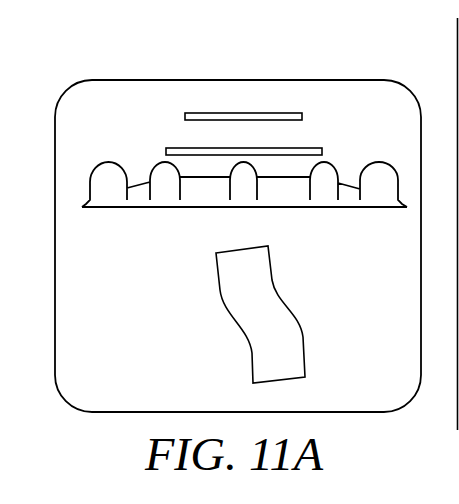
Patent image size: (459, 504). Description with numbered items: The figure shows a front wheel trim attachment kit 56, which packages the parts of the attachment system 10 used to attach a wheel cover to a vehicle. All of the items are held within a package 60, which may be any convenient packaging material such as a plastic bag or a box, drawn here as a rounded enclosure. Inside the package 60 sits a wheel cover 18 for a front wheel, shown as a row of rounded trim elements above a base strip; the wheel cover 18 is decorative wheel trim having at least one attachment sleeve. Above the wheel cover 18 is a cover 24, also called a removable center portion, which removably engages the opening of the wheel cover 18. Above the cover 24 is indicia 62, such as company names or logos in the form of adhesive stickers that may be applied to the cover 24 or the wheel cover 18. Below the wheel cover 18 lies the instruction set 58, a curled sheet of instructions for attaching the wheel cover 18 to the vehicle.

The attachment system 10 is at (108, 107).
The front wheel trim attachment kit 56 is at (290, 57).
The package 60 is at (168, 80).
The indicia 62 is at (303, 115).
The cover 24 is at (305, 148).
The wheel cover 18 is at (139, 197).
The instruction set 58 is at (265, 308).